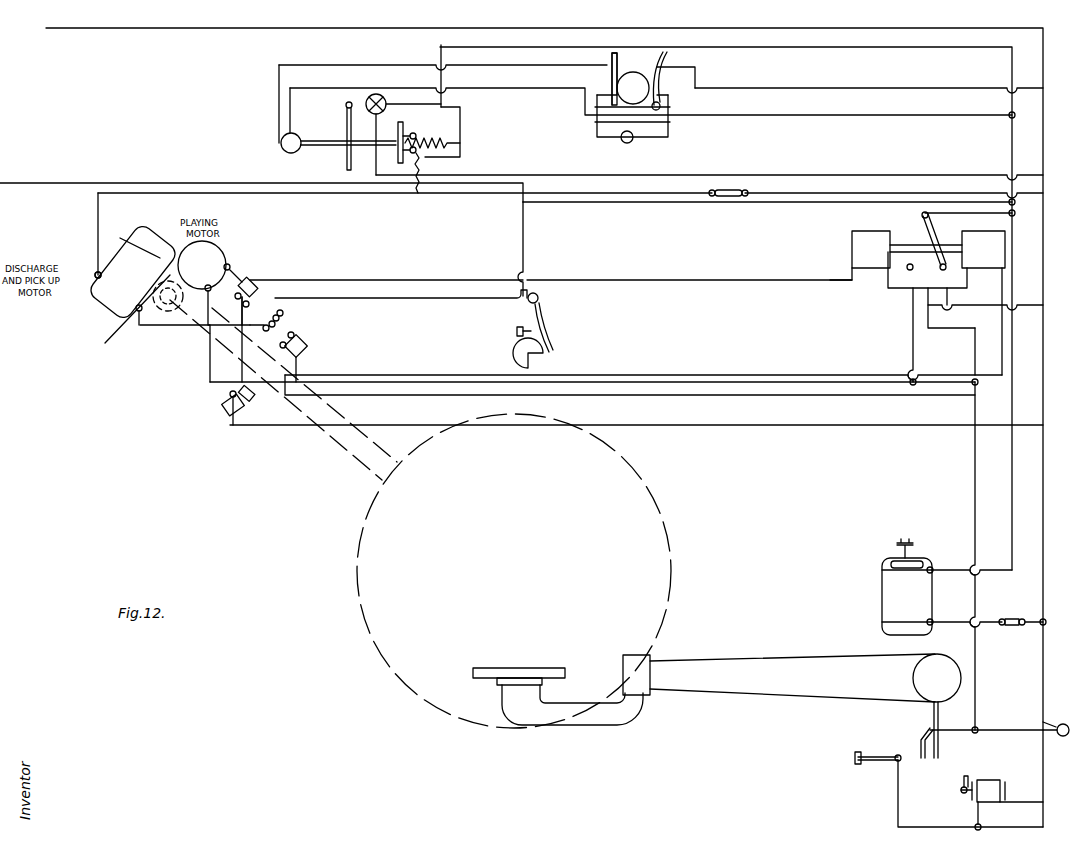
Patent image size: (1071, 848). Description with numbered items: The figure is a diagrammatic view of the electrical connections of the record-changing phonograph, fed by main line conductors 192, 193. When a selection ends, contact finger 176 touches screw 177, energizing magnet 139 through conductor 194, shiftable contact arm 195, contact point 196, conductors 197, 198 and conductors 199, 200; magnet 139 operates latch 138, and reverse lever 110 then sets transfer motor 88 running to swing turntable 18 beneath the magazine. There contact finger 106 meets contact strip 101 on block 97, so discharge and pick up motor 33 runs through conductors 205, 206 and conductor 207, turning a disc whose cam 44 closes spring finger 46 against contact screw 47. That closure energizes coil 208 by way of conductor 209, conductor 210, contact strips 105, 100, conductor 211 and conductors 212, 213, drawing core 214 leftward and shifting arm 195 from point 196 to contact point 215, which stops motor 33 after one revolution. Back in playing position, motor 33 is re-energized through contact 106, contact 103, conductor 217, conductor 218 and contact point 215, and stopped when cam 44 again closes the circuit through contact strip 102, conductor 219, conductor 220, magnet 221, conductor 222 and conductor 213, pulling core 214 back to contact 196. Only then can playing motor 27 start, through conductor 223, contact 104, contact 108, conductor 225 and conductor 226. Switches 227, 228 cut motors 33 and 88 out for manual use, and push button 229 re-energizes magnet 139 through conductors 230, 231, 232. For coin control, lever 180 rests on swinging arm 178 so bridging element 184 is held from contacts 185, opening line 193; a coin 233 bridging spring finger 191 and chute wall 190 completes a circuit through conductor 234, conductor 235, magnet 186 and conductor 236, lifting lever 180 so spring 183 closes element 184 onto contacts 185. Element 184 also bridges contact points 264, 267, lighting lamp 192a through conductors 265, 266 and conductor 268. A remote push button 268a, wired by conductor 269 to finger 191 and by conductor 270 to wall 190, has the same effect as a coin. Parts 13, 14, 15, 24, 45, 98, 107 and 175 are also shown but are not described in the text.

The belt drive 13 is at (746, 661).
The turntable 14 is at (521, 667).
The turntable support arm 15 is at (589, 722).
The turntable 18 is at (514, 571).
The discharge and pick up motor 24 is at (133, 319).
The playing motor 27 is at (204, 311).
The discharge and pick up motor 33 is at (133, 274).
The cam 44 is at (528, 353).
The pivot 45 is at (548, 357).
The spring finger 46 is at (544, 321).
The contact screw 47 is at (515, 331).
The transfer motor 88 is at (880, 592).
The block 97 is at (252, 280).
The switch contact 98 is at (306, 348).
The contact strip 100 is at (263, 290).
The contact strip 101 is at (257, 309).
The contact strip 102 is at (296, 333).
The contact 103 is at (285, 345).
The contact strip 104 is at (226, 399).
The contact strip 105 is at (283, 314).
The contact finger 106 is at (276, 326).
The shaft 107 is at (243, 329).
The contact strip 108 is at (254, 404).
The reverse lever 110 is at (898, 552).
The latch 138 is at (958, 780).
The magnet 139 is at (990, 780).
The rod 175 is at (932, 708).
The contact finger 176 is at (918, 738).
The screw 177 is at (880, 762).
The swinging arm 178 is at (345, 108).
The lever 180 is at (328, 140).
The spring 183 is at (452, 140).
The bridging element 184 is at (396, 150).
The contact points 185 is at (415, 133).
The magnet 186 is at (281, 141).
The chute wall 190 is at (607, 55).
The spring finger 191 is at (666, 58).
The main line conductor 192 is at (1040, 498).
The lamp 192a is at (367, 101).
The main line conductor 193 is at (726, 301).
The conductor 194 is at (1005, 213).
The shiftable contact arm 195 is at (930, 231).
The contact point 196 is at (938, 272).
The conductor 197 is at (973, 353).
The conductor 198 is at (958, 727).
The conductor 199 is at (898, 803).
The conductor 200 is at (975, 825).
The conductor 205 is at (374, 194).
The conductor 206 is at (165, 326).
The conductor 207 is at (392, 394).
The solenoid coil 208 is at (860, 255).
The conductor 209 is at (748, 203).
The conductor 210 is at (415, 299).
The conductor 211 is at (620, 281).
The conductor 212 is at (894, 290).
The conductor 213 is at (985, 308).
The core 214 is at (892, 244).
The contact point 215 is at (906, 270).
The conductor 217 is at (692, 396).
The conductor 218 is at (911, 343).
The conductor 219 is at (693, 374).
The conductor 220 is at (1004, 343).
The magnet 221 is at (983, 249).
The conductor 222 is at (955, 291).
The conductor 223 is at (762, 426).
The conductor 225 is at (208, 374).
The conductor 226 is at (238, 266).
The switch 227 is at (736, 191).
The switch 228 is at (1015, 618).
The push button 229 is at (1048, 725).
The conductor 230 is at (1030, 801).
The conductor 231 is at (1028, 826).
The conductor 232 is at (1012, 731).
The coin 233 is at (632, 95).
The conductor 234 is at (920, 89).
The conductor 235 is at (528, 87).
The conductor 236 is at (372, 87).
The contact point 264 is at (411, 137).
The conductor 265 is at (426, 104).
The conductor 266 is at (662, 175).
The contact point 267 is at (419, 194).
The conductor 268 is at (463, 118).
The push button 268a is at (626, 143).
The conductor 269 is at (672, 133).
The conductor 270 is at (595, 133).